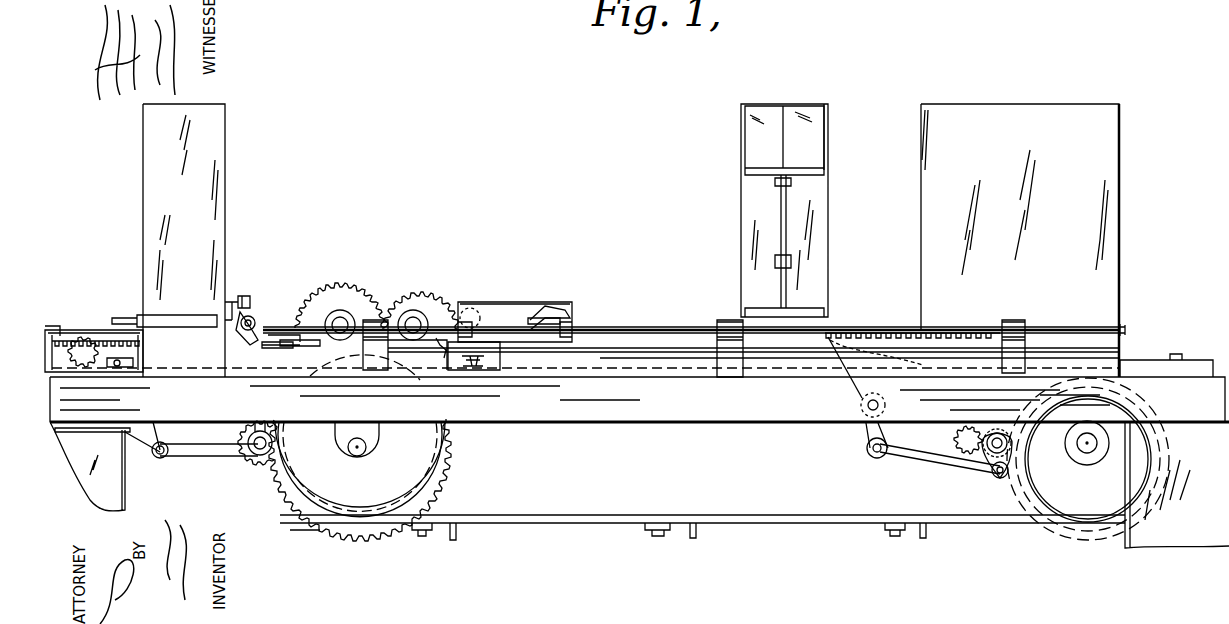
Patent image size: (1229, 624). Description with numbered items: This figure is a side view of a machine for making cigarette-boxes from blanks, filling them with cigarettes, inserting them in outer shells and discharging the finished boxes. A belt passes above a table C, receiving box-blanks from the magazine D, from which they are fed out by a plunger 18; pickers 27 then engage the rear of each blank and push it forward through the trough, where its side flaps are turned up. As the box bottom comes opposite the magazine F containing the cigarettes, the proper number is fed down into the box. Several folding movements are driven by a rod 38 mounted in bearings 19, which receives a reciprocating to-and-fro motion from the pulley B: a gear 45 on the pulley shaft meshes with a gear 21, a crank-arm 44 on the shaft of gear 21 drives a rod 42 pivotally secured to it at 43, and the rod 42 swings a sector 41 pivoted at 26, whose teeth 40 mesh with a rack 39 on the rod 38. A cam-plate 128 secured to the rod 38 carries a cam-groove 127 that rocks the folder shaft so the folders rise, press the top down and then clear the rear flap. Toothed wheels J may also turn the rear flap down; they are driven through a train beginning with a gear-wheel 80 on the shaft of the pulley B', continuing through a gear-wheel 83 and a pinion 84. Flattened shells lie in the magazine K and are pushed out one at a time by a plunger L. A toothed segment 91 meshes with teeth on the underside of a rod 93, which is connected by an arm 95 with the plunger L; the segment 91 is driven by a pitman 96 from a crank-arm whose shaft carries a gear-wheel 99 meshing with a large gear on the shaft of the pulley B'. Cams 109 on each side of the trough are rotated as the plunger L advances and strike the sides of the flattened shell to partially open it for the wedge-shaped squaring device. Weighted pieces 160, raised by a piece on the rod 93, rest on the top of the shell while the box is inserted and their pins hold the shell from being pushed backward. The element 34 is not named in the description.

The plunger 18 is at (1148, 362).
The bearings 19 is at (372, 322).
The gear 21 is at (958, 439).
The pivot 26 is at (862, 405).
The pickers 27 is at (649, 527).
The column 34 is at (828, 112).
The rod 38 is at (670, 328).
The rack 39 is at (828, 340).
The teeth 40 is at (912, 344).
The sector 41 is at (917, 370).
The rod 42 is at (918, 452).
The pivot 43 is at (1003, 476).
The crank-arm 44 is at (990, 462).
The gear 45 is at (1085, 453).
The gear-wheel 80 is at (453, 458).
The gear-wheel 83 is at (340, 311).
The pinion 84 is at (421, 322).
The toothed segment 91 is at (166, 444).
The rod 93 is at (74, 343).
The arm 95 is at (77, 352).
The pitman 96 is at (230, 452).
The gear-wheel 99 is at (260, 466).
The cams 109 is at (288, 348).
The cam-groove 127 is at (570, 306).
The cam-plate 128 is at (508, 302).
The weighted pieces 160 is at (258, 322).
The frame A is at (525, 532).
The pulley B is at (1088, 465).
The pulley B' is at (360, 436).
The table C is at (639, 395).
The magazine D is at (1020, 240).
The magazine F is at (784, 210).
The toothed wheels J is at (462, 300).
The magazine K is at (168, 240).
The plunger L is at (94, 351).